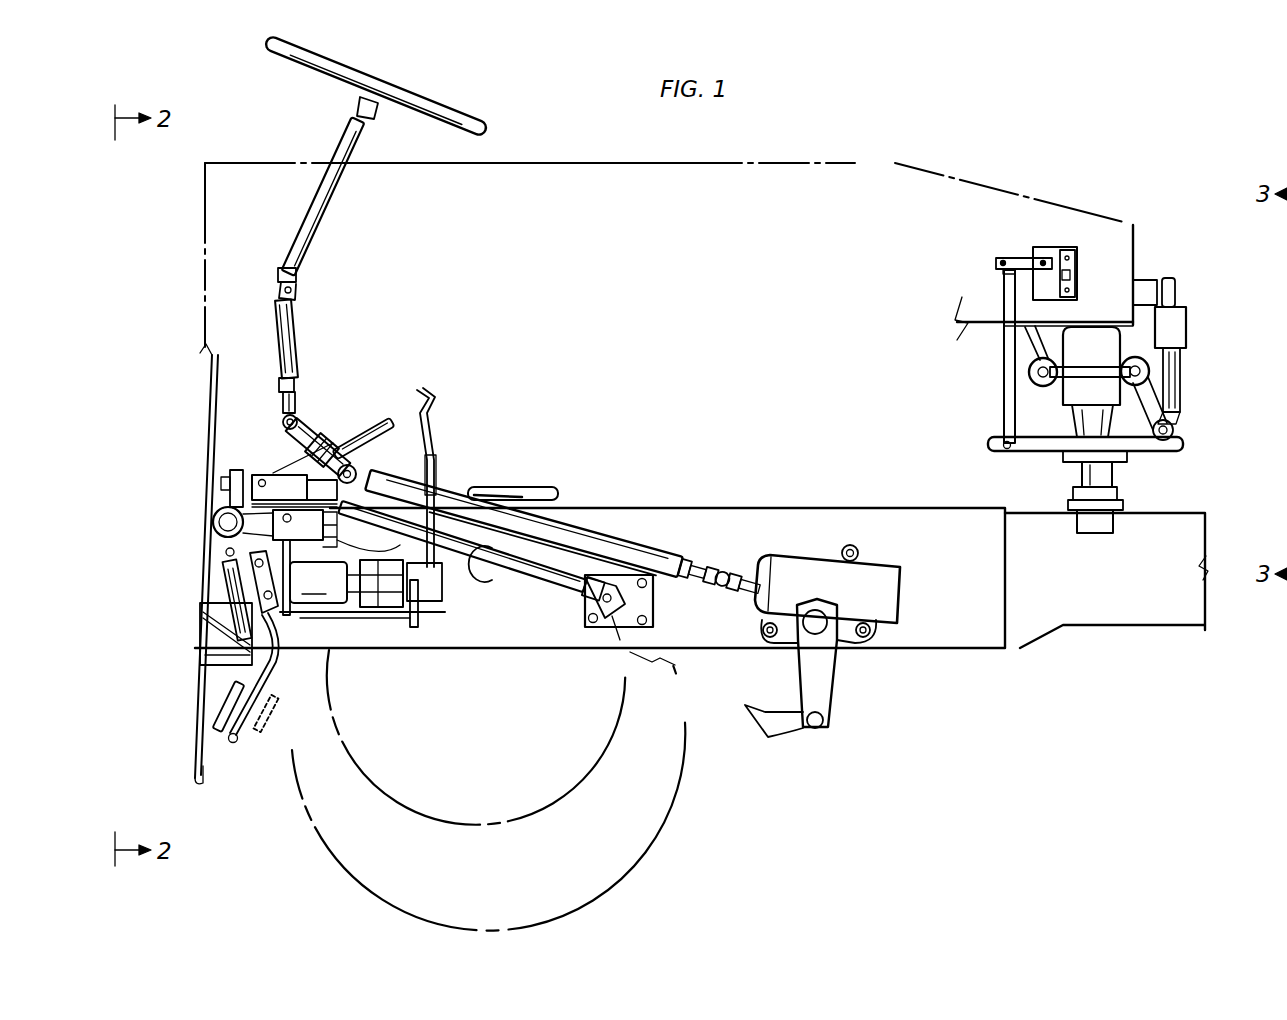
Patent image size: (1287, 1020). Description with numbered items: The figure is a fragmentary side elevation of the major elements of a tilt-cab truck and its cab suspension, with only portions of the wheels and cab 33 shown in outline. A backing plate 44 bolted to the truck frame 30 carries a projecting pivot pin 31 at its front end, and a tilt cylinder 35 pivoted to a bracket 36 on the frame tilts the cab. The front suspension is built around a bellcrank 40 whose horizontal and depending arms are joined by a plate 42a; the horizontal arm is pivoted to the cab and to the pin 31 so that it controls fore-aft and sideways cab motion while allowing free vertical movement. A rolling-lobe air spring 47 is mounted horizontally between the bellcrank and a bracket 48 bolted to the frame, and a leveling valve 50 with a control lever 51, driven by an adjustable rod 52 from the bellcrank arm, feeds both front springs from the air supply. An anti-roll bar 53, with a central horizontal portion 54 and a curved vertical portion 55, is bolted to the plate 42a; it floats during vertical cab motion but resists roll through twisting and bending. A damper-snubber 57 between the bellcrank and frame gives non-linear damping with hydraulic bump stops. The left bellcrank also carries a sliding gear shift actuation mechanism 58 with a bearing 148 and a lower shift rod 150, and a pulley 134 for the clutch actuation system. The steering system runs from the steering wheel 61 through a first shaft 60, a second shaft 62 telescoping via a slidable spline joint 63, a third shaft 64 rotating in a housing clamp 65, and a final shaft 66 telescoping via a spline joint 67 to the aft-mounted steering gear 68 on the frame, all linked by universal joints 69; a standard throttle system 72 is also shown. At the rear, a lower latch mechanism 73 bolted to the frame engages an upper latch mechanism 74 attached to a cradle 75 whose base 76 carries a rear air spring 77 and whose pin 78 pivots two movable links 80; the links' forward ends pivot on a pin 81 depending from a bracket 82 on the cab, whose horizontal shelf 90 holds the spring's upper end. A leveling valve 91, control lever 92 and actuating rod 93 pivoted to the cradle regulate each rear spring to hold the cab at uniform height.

The truck frame 30 is at (828, 508).
The projecting pivot pin 31 is at (286, 515).
The cab 33 is at (474, 180).
The tilt cylinder 35 is at (553, 577).
The bracket 36 is at (654, 603).
The bellcrank 40 is at (230, 497).
The plate 42a is at (250, 572).
The backing plate 44 is at (337, 522).
The air spring 47 is at (362, 590).
The bracket 48 is at (380, 606).
The leveling valve 50 is at (432, 598).
The control lever 51 is at (419, 615).
The adjustable rod 52 is at (349, 615).
The anti-roll bar 53 is at (222, 697).
The central horizontal portion 54 is at (234, 742).
The vertical curved portion 55 is at (277, 662).
The damper-snubber 57 is at (225, 572).
The sliding gear shift actuation mechanism 58 is at (373, 415).
The first shaft 60 is at (322, 198).
The steering wheel 61 is at (367, 90).
The second shaft 62 is at (293, 341).
The slidable spline joint 63 is at (295, 390).
The third shaft 64 is at (318, 437).
The housing clamp 65 is at (340, 454).
The final shaft 66 is at (605, 550).
The spline joint 67 is at (722, 568).
The steering gear 68 is at (900, 546).
The universal joints 69 is at (295, 287).
The throttle system 72 is at (440, 397).
The lower latch mechanism 73 is at (1120, 500).
The upper latch mechanism 74 is at (1100, 476).
The cradle 75 is at (1137, 446).
The base 76 is at (1175, 425).
The air spring 77 is at (1080, 333).
The pin 78 is at (1150, 377).
The movable links 80 is at (1097, 372).
The pin 81 is at (1033, 373).
The bracket 82 is at (1030, 343).
The horizontal shelf 90 is at (1118, 302).
The leveling valve 91 is at (1053, 247).
The control lever 92 is at (1027, 258).
The actuating rod 93 is at (1003, 300).
The pulley 134 is at (213, 522).
The bearing 148 is at (232, 471).
The lower shift rod 150 is at (512, 485).